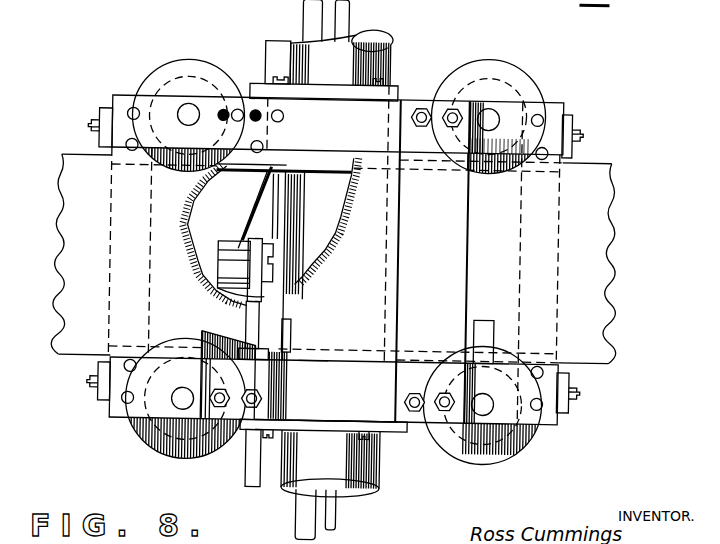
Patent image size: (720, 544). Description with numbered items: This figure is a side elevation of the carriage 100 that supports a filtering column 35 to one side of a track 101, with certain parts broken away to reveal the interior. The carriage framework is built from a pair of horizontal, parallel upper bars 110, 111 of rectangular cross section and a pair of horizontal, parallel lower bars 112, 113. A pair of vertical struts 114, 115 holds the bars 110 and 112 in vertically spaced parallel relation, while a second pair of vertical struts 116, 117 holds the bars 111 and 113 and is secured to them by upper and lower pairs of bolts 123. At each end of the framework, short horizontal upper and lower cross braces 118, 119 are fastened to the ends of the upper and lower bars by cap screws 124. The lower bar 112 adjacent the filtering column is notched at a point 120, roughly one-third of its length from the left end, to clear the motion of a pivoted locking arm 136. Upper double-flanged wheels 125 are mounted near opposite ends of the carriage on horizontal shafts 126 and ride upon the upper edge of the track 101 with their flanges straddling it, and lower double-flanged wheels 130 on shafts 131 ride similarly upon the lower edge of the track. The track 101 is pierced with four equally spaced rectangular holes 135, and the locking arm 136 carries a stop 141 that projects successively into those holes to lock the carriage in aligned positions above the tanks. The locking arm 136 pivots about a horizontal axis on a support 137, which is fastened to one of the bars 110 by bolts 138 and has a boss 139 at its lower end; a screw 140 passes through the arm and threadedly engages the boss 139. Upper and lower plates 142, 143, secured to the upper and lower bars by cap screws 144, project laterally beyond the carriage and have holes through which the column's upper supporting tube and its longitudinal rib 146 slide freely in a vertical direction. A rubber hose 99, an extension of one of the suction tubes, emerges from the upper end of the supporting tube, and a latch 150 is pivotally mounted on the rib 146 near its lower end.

The filtering column 35 is at (388, 50).
The rubber hose 99 is at (339, 24).
The carriage 100 is at (474, 272).
The track 101 is at (607, 232).
The upper bar 110 is at (330, 180).
The upper bar 111 is at (562, 108).
The lower bar 112 is at (320, 349).
The lower bar 113 is at (348, 378).
The strut 114 is at (112, 273).
The strut 115 is at (559, 300).
The strut 116 is at (246, 338).
The strut 117 is at (463, 232).
The upper cross brace 118 is at (104, 112).
The lower cross brace 119 is at (104, 403).
The notch point 120 is at (279, 378).
The bolts 123 is at (449, 107).
The cap screws 124 is at (88, 134).
The upper double-flanged wheel 125 is at (212, 56).
The horizontal shaft 126 is at (195, 99).
The lower double-flanged wheel 130 is at (158, 451).
The shaft 131 is at (185, 391).
The rectangular hole 135 is at (287, 328).
The pivoted locking arm 136 is at (265, 300).
The support 137 is at (243, 202).
The bolts 138 is at (283, 118).
The boss 139 is at (218, 280).
The screw 140 is at (276, 276).
The stop 141 is at (248, 302).
The upper plate 142 is at (372, 101).
The lower plate 143 is at (336, 430).
The cap screws 144 is at (394, 90).
The rib 146 is at (270, 43).
The latch 150 is at (244, 471).